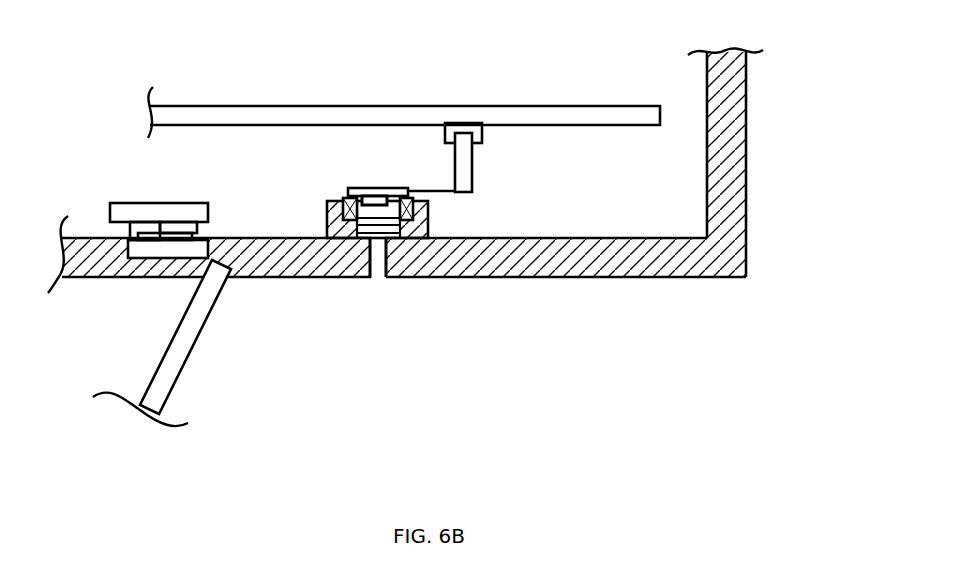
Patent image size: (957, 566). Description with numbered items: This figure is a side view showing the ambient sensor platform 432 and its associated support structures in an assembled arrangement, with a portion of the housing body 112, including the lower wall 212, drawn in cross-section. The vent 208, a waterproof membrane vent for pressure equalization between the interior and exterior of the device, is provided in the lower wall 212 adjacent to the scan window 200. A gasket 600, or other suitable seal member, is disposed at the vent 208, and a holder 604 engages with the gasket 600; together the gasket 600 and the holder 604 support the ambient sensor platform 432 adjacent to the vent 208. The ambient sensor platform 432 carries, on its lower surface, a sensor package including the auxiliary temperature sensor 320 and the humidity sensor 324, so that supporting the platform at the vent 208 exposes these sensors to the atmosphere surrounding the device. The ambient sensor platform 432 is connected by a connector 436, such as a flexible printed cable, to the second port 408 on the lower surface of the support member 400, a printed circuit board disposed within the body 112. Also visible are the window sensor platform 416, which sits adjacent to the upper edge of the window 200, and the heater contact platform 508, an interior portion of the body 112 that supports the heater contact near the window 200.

The body portion 112 is at (760, 150).
The scan window 200 is at (212, 312).
The vent 208 is at (377, 278).
The lower wall 212 is at (640, 278).
The auxiliary temperature sensor 320 is at (377, 194).
The humidity sensor 324 is at (374, 200).
The support member 400 is at (296, 101).
The second port 408 is at (482, 133).
The window sensor platform 416 is at (110, 210).
The ambient sensor platform 432 is at (347, 190).
The connector 436 is at (472, 168).
The heater contact platform 508 is at (126, 254).
The gasket 600 is at (427, 232).
The holder 604 is at (418, 206).